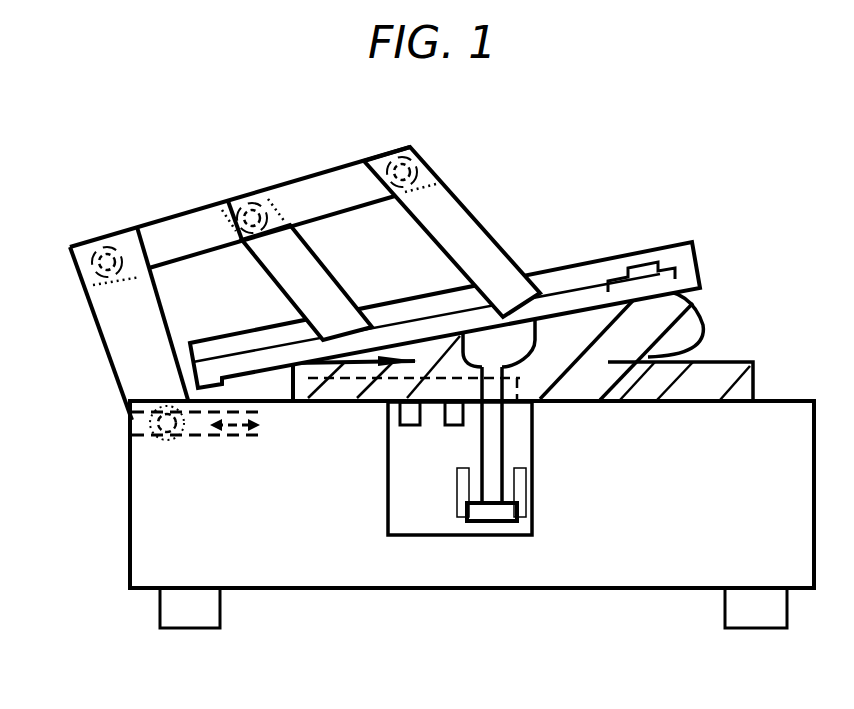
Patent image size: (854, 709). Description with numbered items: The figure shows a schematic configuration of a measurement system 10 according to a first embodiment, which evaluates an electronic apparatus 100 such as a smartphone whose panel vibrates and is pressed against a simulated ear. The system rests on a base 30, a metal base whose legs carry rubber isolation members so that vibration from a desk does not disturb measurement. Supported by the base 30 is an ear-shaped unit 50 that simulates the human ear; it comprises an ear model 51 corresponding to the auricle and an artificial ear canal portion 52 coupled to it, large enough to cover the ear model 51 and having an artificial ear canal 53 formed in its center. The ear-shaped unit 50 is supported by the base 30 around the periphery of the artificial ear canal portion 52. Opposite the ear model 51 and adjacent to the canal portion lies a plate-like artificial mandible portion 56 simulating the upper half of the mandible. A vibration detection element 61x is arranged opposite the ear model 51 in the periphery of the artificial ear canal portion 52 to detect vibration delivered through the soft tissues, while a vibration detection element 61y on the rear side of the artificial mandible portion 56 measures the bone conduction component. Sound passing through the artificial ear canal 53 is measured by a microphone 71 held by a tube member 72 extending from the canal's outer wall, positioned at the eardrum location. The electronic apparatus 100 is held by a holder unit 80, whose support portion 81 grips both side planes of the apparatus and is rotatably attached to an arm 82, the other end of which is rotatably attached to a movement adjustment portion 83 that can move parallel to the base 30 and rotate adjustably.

The measurement system 10 is at (503, 675).
The base 30 is at (188, 578).
The ear-shaped unit 50 is at (731, 395).
The ear model 51 is at (683, 337).
The artificial ear canal portion 52 is at (500, 417).
The artificial ear canal 53 is at (495, 455).
The artificial mandible portion 56 is at (410, 365).
The vibration detection element 61x is at (457, 417).
The vibration detection element 61y is at (413, 413).
The microphone 71 is at (487, 530).
The tube member 72 is at (533, 502).
The holder unit 80 is at (67, 239).
The support portion 81 is at (303, 282).
The arm 82 is at (183, 240).
The movement adjustment portion 83 is at (130, 378).
The electronic apparatus 100 is at (577, 288).